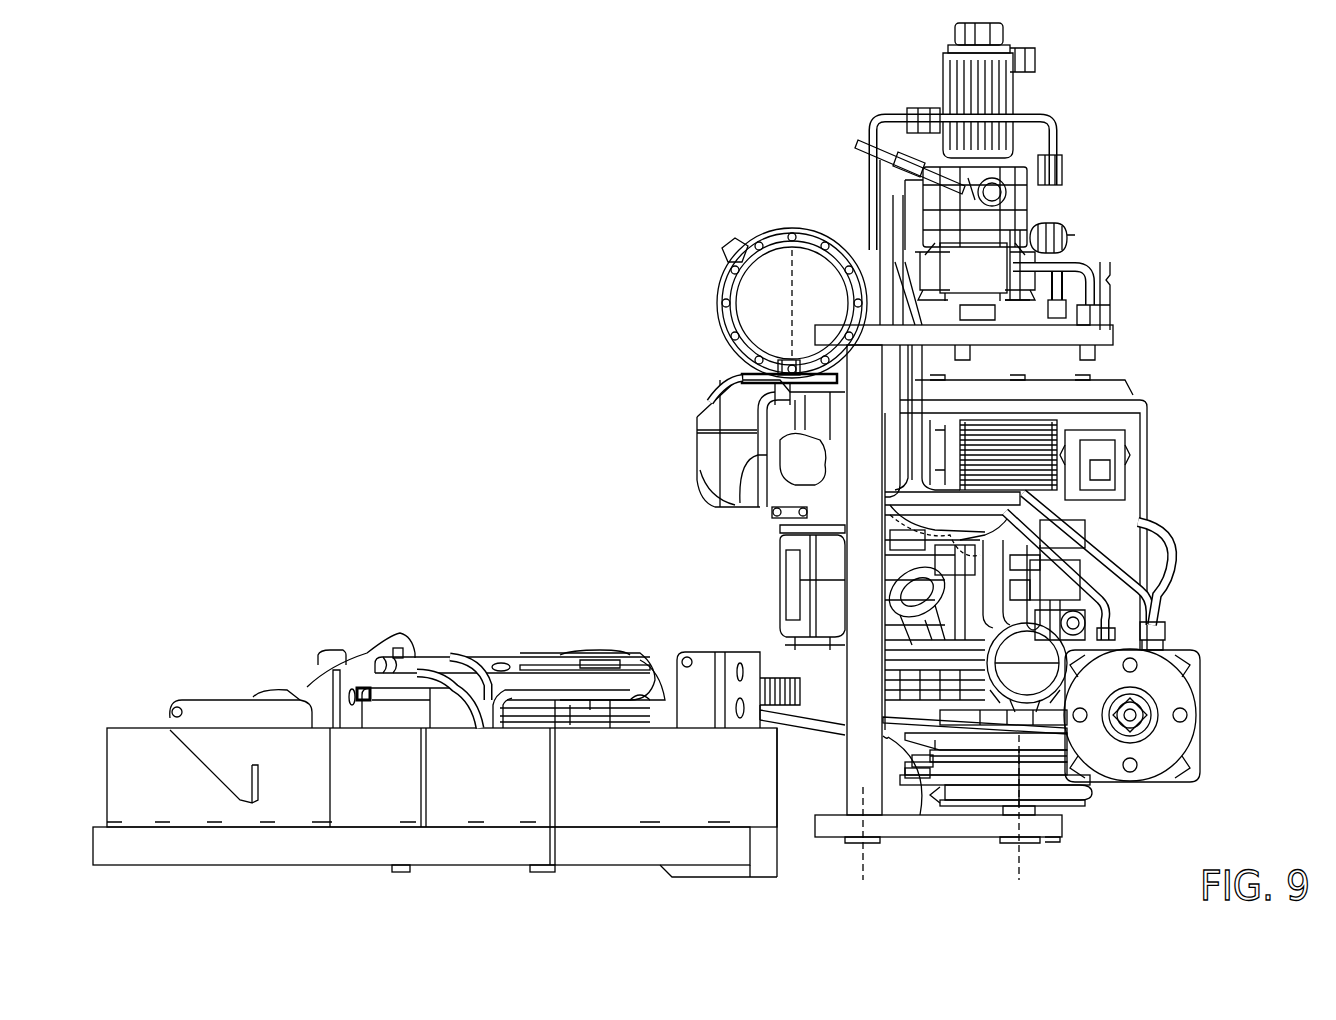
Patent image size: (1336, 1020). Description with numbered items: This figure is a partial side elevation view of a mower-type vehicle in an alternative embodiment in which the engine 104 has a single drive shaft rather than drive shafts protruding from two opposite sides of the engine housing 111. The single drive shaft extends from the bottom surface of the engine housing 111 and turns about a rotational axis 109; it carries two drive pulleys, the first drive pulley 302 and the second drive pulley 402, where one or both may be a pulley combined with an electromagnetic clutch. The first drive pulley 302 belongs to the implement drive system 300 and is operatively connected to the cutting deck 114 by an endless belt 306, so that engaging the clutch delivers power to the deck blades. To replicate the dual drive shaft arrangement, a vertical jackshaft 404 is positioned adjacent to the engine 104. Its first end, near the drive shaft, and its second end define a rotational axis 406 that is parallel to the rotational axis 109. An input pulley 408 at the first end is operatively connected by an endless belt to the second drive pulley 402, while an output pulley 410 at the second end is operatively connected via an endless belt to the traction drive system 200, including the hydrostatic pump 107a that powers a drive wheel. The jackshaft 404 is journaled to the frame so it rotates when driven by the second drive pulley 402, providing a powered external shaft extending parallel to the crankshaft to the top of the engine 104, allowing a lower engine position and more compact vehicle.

The internal combustion engine 104 is at (1125, 400).
The left hydrostatic pump 107a is at (905, 228).
The rotational axis 109 is at (1013, 863).
The engine housing 111 is at (1145, 522).
The cutting deck 114 is at (470, 873).
The traction drive system 200 is at (1078, 170).
The implement drive system 300 is at (762, 650).
The first drive pulley 302 is at (1058, 797).
The endless belt 306 is at (918, 815).
The second drive pulley 402 is at (1050, 840).
The vertical jackshaft 404 is at (820, 578).
The rotational axis of the jackshaft 406 is at (863, 878).
The input pulley 408 is at (835, 843).
The output pulley 410 is at (815, 335).